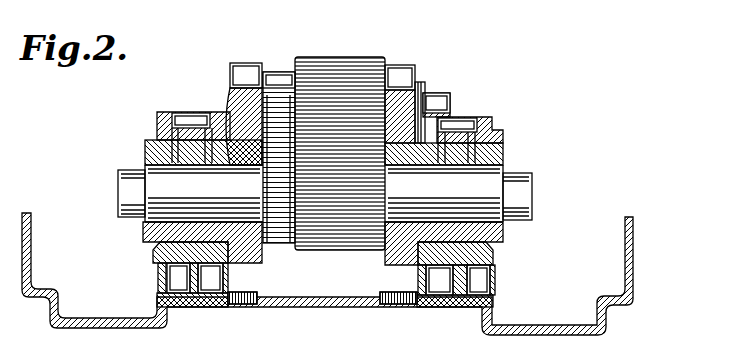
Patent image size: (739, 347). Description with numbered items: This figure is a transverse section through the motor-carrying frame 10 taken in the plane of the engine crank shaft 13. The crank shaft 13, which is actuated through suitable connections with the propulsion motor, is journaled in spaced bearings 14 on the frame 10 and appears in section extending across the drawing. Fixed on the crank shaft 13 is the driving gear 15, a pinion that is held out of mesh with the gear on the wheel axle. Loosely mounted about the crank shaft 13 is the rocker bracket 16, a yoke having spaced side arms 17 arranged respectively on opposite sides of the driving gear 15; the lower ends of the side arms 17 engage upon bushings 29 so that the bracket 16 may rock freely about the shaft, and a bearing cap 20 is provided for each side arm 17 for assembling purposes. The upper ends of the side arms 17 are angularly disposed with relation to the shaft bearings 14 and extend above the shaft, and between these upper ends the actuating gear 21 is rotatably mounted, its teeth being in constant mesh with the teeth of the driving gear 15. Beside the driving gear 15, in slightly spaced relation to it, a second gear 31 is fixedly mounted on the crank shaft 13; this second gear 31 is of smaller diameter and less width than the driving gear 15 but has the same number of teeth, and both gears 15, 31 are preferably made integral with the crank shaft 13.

The frame 10 is at (633, 264).
The crank shaft 13 is at (153, 188).
The bearings 14 is at (158, 254).
The driving gear 15 is at (388, 199).
The rocker bracket 16 is at (241, 100).
The side arms 17 is at (248, 92).
The bearing cap 20 is at (322, 285).
The actuating gear 21 is at (358, 60).
The bushings 29 is at (143, 233).
The second gear 31 is at (281, 246).